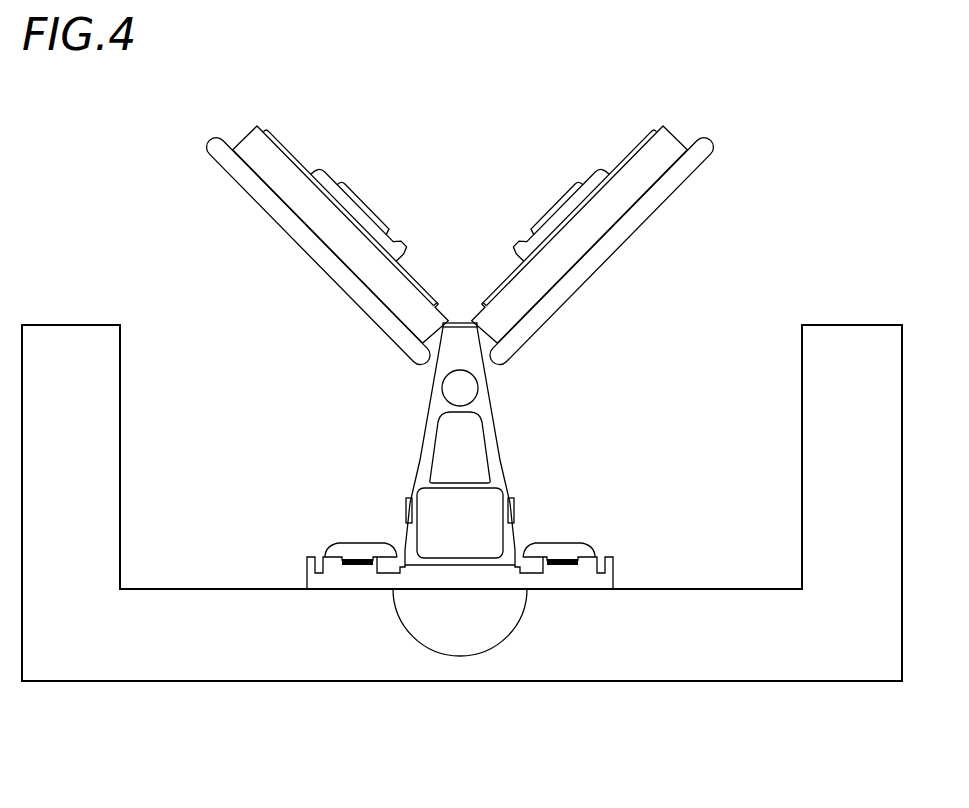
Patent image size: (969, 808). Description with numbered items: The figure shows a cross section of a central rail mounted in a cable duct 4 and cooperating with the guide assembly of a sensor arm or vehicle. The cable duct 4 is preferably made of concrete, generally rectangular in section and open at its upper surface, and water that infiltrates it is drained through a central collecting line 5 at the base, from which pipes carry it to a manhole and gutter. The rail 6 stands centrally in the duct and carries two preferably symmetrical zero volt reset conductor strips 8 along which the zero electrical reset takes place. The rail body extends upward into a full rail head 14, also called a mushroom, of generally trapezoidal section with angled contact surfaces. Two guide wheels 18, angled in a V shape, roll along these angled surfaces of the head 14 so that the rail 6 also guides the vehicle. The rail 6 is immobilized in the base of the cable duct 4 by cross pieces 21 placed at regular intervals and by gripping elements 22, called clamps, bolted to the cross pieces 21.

The cable duct 4 is at (840, 698).
The central collecting line 5 is at (475, 623).
The rail 6 is at (505, 415).
The zero volt reset conductor strips 8 is at (407, 503).
The rail head 14 is at (455, 353).
The guide wheels 18 is at (252, 210).
The cross pieces 21 is at (363, 578).
The gripping elements 22 is at (352, 540).